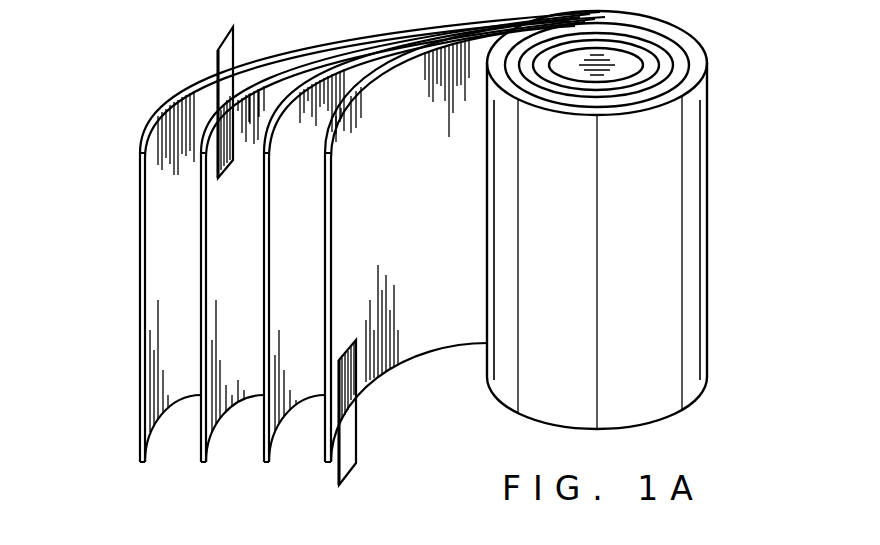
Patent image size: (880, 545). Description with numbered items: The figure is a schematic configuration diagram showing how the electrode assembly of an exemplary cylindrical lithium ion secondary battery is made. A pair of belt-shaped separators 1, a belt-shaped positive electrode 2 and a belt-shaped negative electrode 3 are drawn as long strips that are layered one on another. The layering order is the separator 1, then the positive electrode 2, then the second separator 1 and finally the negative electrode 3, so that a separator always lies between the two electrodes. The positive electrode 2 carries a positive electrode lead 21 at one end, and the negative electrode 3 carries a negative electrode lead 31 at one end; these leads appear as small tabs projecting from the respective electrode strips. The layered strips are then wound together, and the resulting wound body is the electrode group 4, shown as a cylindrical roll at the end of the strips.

The separator 1 is at (245, 398).
The positive electrode 2 is at (270, 102).
The positive electrode lead 21 is at (224, 70).
The negative electrode 3 is at (417, 337).
The negative electrode lead 31 is at (348, 452).
The electrode group 4 is at (740, 58).